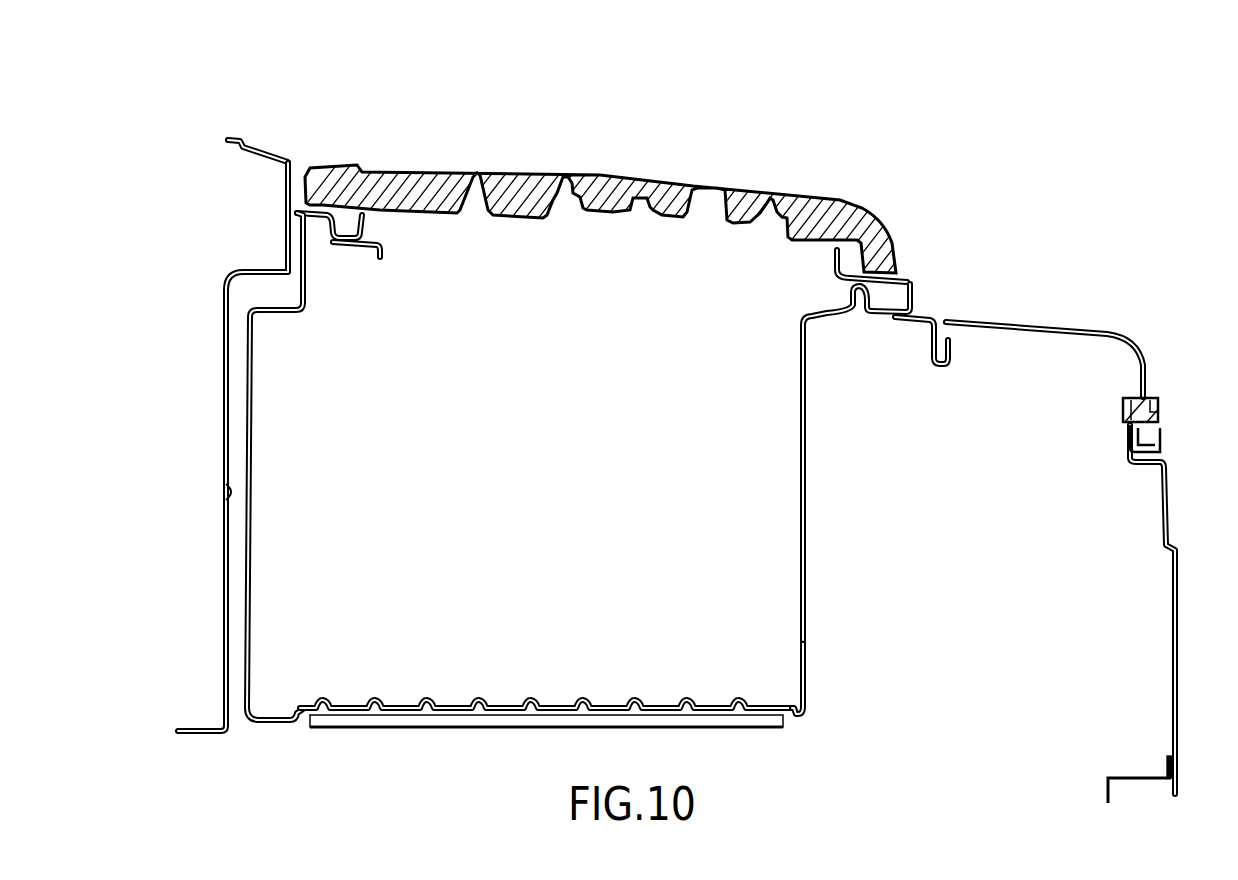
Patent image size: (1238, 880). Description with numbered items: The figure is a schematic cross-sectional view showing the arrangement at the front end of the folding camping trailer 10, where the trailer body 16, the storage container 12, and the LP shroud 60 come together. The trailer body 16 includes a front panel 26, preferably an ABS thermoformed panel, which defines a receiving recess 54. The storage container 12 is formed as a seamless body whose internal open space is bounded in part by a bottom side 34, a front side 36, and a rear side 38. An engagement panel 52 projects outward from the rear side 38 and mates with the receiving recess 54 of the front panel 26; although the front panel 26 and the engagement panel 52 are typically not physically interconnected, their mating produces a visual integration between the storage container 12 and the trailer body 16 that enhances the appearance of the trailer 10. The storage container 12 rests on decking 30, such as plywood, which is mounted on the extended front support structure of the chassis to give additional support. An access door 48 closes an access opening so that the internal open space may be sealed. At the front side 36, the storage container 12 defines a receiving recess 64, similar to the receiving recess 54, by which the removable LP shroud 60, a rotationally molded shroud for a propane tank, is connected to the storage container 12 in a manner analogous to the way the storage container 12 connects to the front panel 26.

The folding camping trailer 10 is at (893, 82).
The storage container 12 is at (722, 148).
The trailer body 16 is at (258, 152).
The front panel 26 is at (225, 660).
The decking 30 is at (478, 728).
The bottom side 34 is at (604, 712).
The front side 36 is at (806, 463).
The rear side 38 is at (306, 268).
The access door 48 is at (835, 215).
The engagement panel 52 is at (252, 590).
The receiving recess 54 is at (225, 497).
The LP shroud 60 is at (1148, 385).
The receiving recess 64 is at (806, 666).